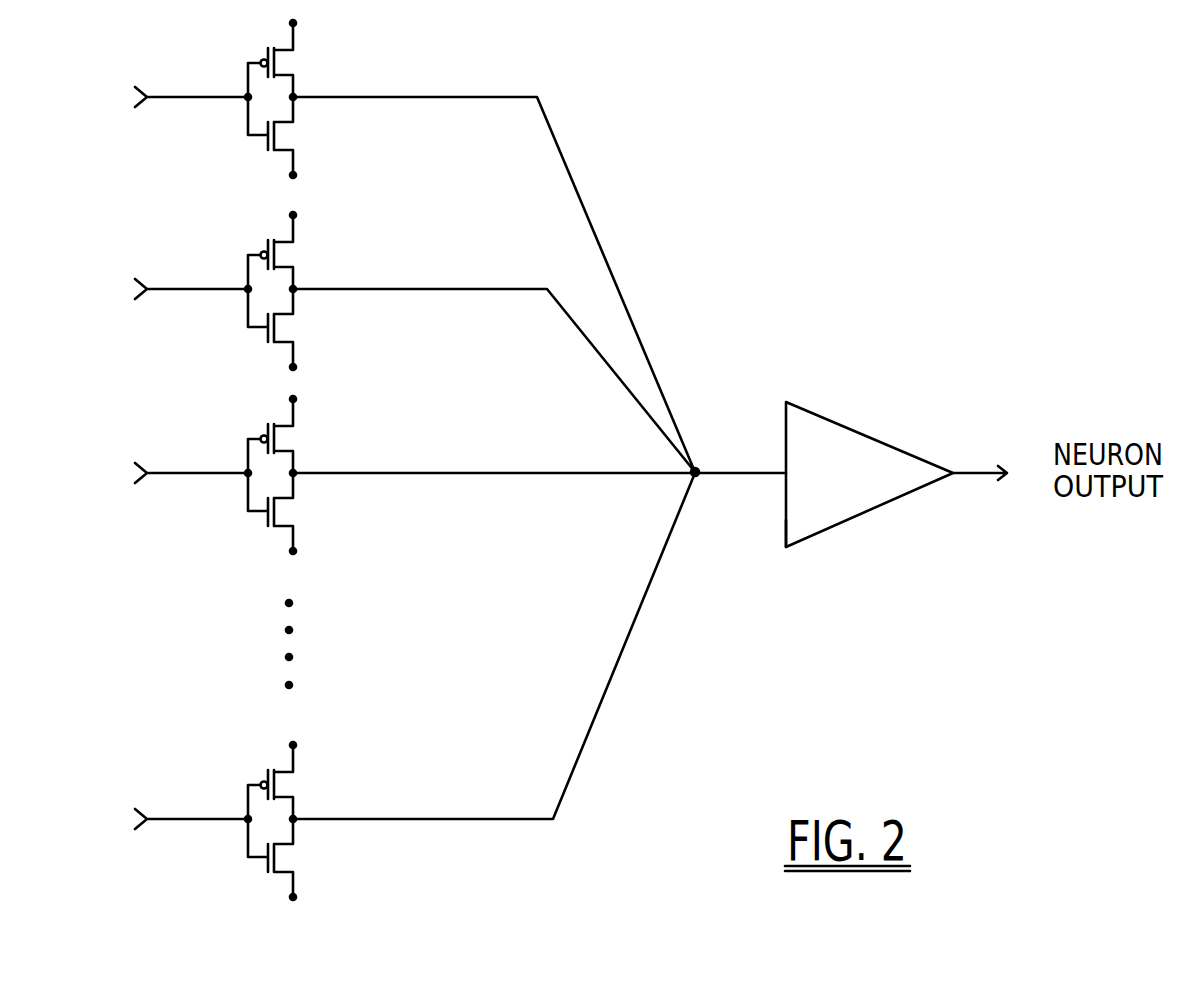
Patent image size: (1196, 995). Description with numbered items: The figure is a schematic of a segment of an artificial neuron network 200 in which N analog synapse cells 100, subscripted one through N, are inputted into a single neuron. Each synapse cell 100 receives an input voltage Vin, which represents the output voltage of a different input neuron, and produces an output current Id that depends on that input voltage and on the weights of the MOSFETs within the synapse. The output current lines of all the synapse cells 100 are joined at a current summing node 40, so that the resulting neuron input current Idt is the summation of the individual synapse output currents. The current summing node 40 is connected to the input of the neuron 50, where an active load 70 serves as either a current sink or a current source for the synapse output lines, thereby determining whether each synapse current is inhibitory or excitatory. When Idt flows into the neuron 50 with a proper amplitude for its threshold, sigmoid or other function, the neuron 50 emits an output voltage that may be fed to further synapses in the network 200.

The synapse cell 100 is at (232, 63).
The artificial neuron network 200 is at (411, 33).
The current summing node 40 is at (700, 468).
The neuron 50 is at (858, 412).
The active load 70 is at (800, 536).